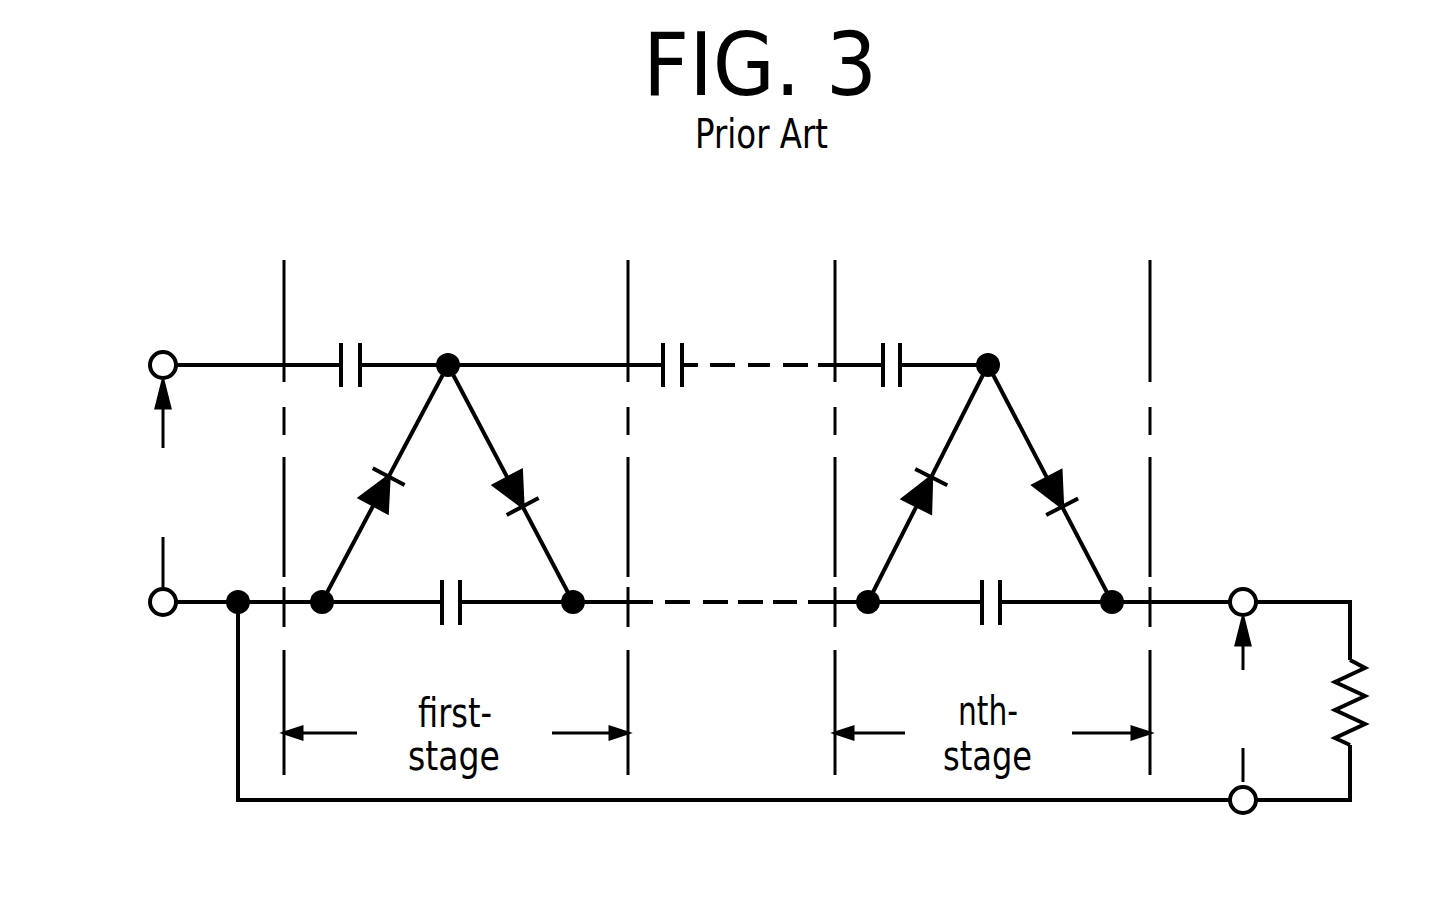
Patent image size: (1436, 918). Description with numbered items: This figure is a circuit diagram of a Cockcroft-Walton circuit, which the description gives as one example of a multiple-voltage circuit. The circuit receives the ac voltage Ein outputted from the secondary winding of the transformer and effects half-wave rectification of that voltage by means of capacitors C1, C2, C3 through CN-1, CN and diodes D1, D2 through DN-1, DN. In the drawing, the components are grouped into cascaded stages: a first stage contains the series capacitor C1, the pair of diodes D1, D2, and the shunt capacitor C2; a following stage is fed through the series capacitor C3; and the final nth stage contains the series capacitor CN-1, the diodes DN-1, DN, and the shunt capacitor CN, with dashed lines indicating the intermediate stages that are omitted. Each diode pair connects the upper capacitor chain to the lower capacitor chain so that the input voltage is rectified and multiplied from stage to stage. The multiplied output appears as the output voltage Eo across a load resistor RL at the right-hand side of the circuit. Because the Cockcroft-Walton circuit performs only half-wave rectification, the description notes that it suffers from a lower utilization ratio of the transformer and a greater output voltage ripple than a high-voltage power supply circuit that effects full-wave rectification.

The capacitor C1 is at (352, 328).
The capacitor C2 is at (443, 634).
The capacitor C3 is at (670, 327).
The capacitor CN-1 is at (891, 365).
The capacitor CN is at (992, 634).
The diode D1 is at (378, 483).
The diode D2 is at (518, 483).
The diode DN-1 is at (916, 483).
The diode DN is at (1050, 483).
The ac voltage Ein is at (162, 483).
The output voltage Eo is at (1236, 699).
The load resistor RL is at (1382, 702).